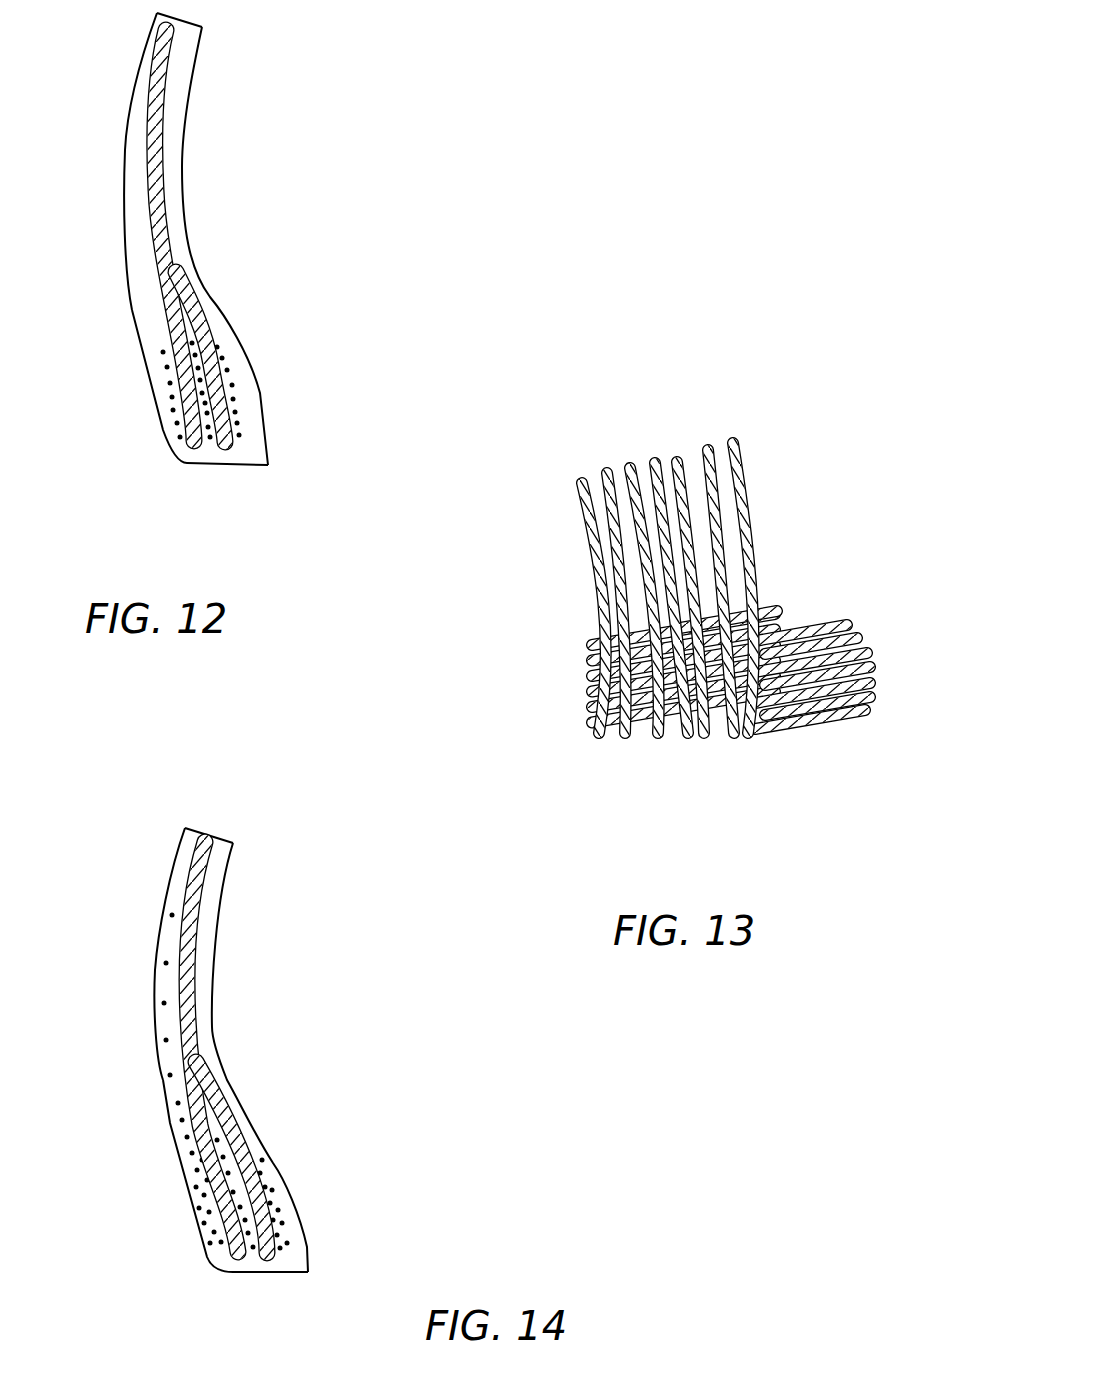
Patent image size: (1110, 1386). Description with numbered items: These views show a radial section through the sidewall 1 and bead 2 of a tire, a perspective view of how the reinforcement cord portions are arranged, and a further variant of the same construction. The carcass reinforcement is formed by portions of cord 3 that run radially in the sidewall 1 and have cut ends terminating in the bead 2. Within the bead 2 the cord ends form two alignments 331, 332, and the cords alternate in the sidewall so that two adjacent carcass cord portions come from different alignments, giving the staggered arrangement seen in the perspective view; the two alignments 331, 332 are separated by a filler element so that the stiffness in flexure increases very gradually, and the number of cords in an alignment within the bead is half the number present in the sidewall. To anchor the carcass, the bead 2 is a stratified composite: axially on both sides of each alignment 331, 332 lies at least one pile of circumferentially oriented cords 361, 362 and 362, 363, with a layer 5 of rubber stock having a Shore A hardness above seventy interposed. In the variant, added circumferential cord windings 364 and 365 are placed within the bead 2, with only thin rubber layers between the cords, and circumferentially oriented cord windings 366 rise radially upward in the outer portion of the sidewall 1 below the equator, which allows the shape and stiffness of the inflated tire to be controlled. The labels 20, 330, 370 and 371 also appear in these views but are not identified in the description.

In FIG. 12, the sidewall 1 is at (139, 160).
In FIG. 14, the sidewall 1 is at (178, 890).
In FIG. 12, the bead 2 is at (160, 410).
In FIG. 14, the bead 2 is at (185, 1200).
In FIG. 12, the cord 3 is at (176, 50).
In FIG. 14, the cord 3 is at (200, 877).
In FIG. 12, the layer of rubber stock 5 is at (208, 447).
In FIG. 14, the layer of rubber stock 5 is at (235, 1167).
In FIG. 12, the bottom edge 20 is at (227, 465).
In FIG. 14, the bottom edge 20 is at (273, 1272).
In FIG. 12, the woven yarn fabric 330 is at (170, 116).
In FIG. 13, the woven yarn fabric 330 is at (768, 460).
In FIG. 14, the woven yarn fabric 330 is at (198, 925).
In FIG. 12, the alignment 331 is at (198, 312).
In FIG. 13, the alignment 331 is at (626, 742).
In FIG. 14, the alignment 331 is at (233, 1122).
In FIG. 12, the alignment 332 is at (165, 320).
In FIG. 13, the alignment 332 is at (597, 742).
In FIG. 14, the alignment 332 is at (182, 1108).
In FIG. 12, the pile of circumferentially oriented cords 361 is at (230, 383).
In FIG. 13, the pile of circumferentially oriented cords 361 is at (848, 726).
In FIG. 14, the pile of circumferentially oriented cords 361 is at (282, 1252).
In FIG. 12, the pile of circumferentially oriented cords 362 is at (196, 350).
In FIG. 13, the pile of circumferentially oriented cords 362 is at (689, 742).
In FIG. 14, the pile of circumferentially oriented cords 362 is at (255, 1265).
In FIG. 12, the pile of circumferentially oriented cords 363 is at (167, 367).
In FIG. 13, the pile of circumferentially oriented cords 363 is at (580, 689).
In FIG. 14, the pile of circumferentially oriented cords 363 is at (222, 1249).
In FIG. 14, the circumferential cord winding 364 is at (278, 1206).
In FIG. 14, the circumferential cord winding 365 is at (202, 1221).
In FIG. 14, the circumferentially oriented cord windings 366 is at (162, 1003).
In FIG. 12, the solid handle region 370 is at (148, 263).
In FIG. 14, the solid handle region 370 is at (160, 1028).
In FIG. 12, the right handle region 371 is at (185, 257).
In FIG. 14, the right handle region 371 is at (202, 1043).